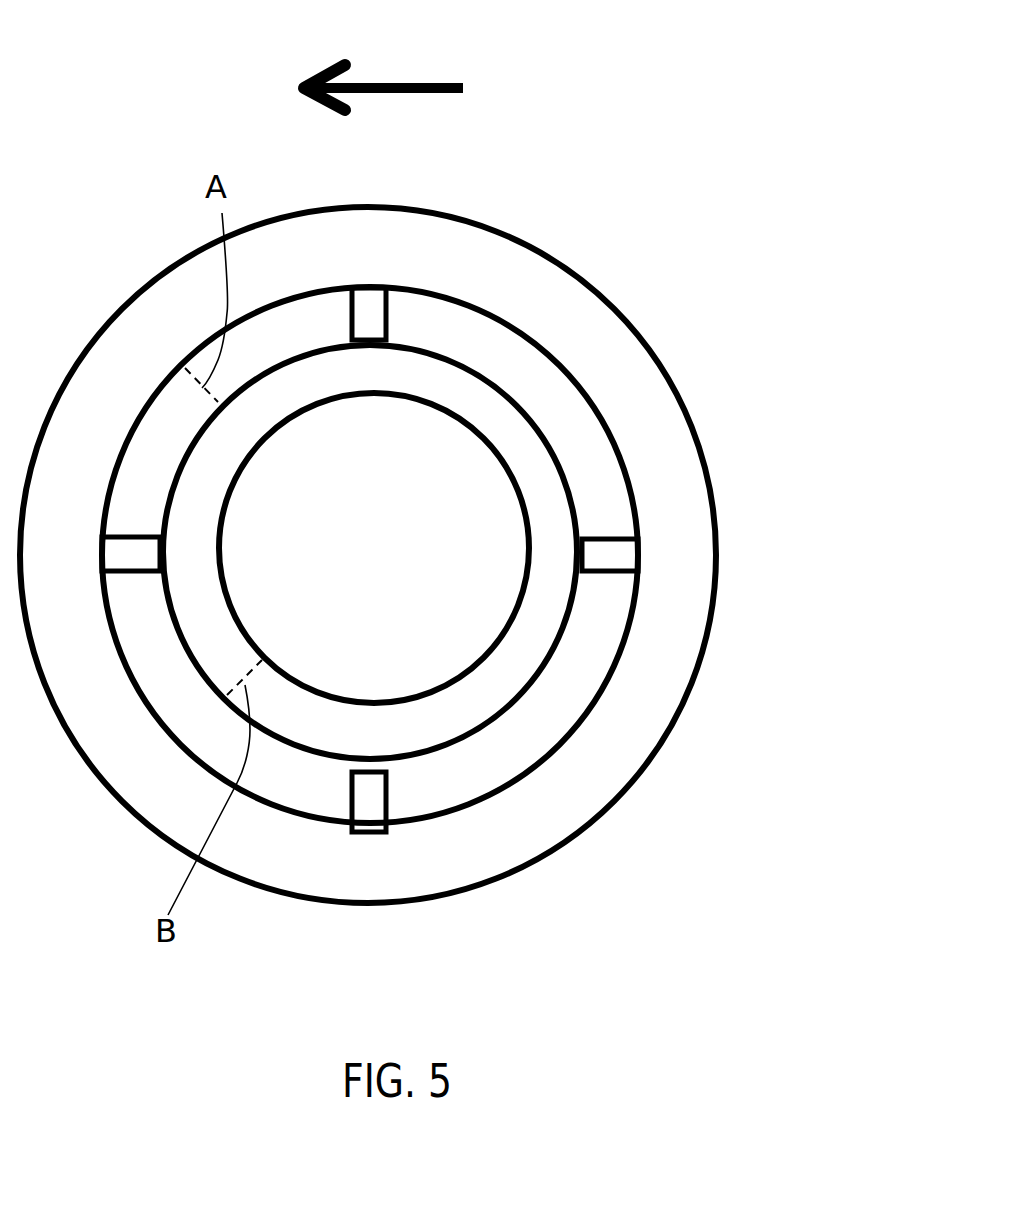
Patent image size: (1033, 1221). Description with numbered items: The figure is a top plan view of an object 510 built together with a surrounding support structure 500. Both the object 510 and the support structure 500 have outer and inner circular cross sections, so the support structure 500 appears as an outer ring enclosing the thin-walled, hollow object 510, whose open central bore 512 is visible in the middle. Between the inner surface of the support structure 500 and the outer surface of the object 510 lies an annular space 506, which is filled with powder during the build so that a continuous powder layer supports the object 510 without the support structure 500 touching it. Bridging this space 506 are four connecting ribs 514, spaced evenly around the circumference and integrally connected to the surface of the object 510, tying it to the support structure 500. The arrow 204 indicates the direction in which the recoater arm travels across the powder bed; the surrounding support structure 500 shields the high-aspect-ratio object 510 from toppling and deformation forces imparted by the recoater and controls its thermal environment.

The arrow 204 is at (430, 82).
The support structure 500 is at (617, 347).
The space 506 is at (605, 477).
The object 510 is at (468, 702).
The central bore 512 is at (372, 525).
The connecting rib 514 is at (608, 557).